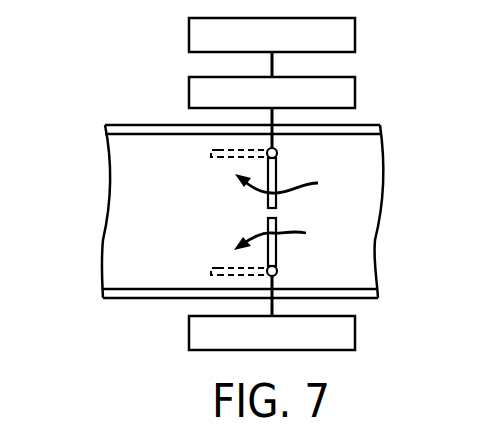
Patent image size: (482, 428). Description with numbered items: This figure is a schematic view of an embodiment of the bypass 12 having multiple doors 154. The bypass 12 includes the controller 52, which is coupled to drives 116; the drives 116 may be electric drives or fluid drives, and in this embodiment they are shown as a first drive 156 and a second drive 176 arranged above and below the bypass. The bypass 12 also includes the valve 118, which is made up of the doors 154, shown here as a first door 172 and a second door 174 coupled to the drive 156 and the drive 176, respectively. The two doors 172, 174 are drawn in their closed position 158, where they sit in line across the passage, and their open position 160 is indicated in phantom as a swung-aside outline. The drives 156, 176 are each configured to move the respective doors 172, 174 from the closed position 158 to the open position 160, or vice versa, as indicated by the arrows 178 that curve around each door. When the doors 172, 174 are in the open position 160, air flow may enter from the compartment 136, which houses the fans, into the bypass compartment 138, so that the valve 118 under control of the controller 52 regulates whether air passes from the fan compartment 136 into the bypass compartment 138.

The bypass 12 is at (58, 81).
The controller 52 is at (355, 37).
The drives 116 is at (189, 91).
The valve 118 is at (277, 222).
The compartment 136 is at (372, 153).
The bypass compartment 138 is at (118, 182).
The doors 154 is at (266, 219).
The drive 156 is at (355, 95).
The closed position 158 is at (285, 248).
The open position 160 is at (208, 157).
The door 172 is at (279, 168).
The door 174 is at (279, 258).
The drive 176 is at (355, 331).
The arrows 178 is at (318, 183).